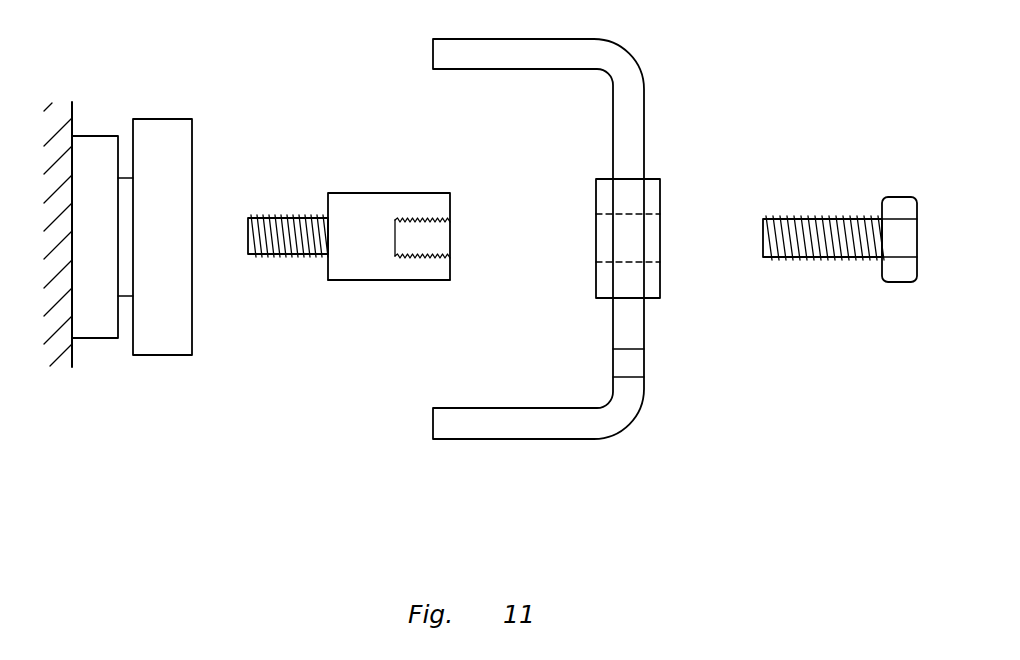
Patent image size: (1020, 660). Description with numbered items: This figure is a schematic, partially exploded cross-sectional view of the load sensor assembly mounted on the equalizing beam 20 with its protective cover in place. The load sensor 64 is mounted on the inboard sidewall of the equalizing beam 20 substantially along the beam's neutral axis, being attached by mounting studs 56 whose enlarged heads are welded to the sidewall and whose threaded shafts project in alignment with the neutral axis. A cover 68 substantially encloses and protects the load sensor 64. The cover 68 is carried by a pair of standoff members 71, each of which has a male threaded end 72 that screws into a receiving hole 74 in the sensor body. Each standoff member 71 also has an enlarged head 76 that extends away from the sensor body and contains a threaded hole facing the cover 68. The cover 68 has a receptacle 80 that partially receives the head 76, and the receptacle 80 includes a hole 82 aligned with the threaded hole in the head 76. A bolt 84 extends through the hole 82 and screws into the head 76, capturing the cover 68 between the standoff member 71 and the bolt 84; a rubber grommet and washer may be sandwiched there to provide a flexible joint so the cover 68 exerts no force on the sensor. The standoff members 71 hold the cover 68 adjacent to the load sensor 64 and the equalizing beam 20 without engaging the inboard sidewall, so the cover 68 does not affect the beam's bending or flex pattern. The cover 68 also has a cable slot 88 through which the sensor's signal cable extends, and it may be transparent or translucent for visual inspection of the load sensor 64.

The equalizing beam 20 is at (55, 340).
The mounting stud 56 is at (93, 322).
The load sensor 64 is at (168, 337).
The cover 68 is at (640, 98).
The standoff member 71 is at (328, 280).
The male threaded end 72 is at (265, 254).
The receiving hole 74 is at (428, 235).
The enlarged head 76 is at (398, 282).
The receptacle 80 is at (575, 219).
The hole 82 is at (650, 242).
The bolt 84 is at (825, 220).
The cable slot 88 is at (635, 367).